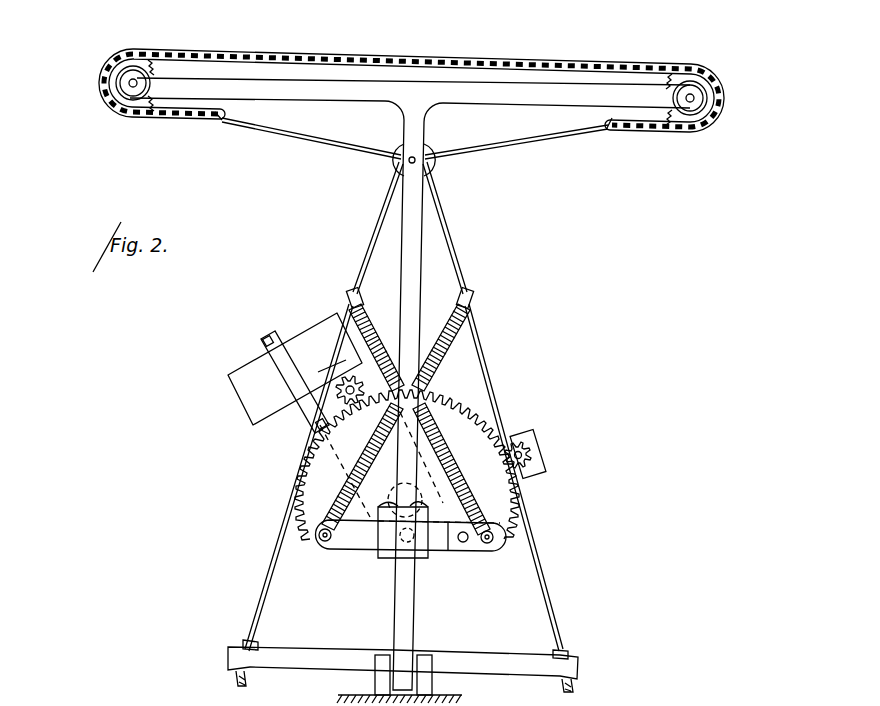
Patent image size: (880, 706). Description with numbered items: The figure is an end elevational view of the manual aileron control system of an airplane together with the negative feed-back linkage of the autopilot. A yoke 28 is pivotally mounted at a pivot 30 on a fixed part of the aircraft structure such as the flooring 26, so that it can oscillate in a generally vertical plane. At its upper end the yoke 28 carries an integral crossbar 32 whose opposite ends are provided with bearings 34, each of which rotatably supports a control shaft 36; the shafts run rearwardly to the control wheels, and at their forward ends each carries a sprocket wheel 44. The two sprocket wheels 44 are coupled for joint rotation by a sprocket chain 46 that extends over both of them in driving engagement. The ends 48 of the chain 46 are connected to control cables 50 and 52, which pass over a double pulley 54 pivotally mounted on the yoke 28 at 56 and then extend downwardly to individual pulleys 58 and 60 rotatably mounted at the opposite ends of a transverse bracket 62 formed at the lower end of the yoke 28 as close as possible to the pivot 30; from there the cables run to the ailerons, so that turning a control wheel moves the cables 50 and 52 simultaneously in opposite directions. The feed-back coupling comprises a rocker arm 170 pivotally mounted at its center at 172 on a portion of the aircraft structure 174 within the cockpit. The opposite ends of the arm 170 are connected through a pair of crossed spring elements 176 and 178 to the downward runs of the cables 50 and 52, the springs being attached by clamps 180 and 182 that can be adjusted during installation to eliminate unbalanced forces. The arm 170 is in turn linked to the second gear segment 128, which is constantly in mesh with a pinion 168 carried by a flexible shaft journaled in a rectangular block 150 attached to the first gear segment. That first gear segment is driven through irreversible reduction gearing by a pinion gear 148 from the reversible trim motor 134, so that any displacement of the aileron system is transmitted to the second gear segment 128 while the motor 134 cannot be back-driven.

The flooring 26 is at (420, 690).
The yoke 28 is at (410, 218).
The pivot 30 is at (365, 661).
The crossbar 32 is at (313, 90).
The bearing 34 is at (125, 101).
The control shaft 36 is at (128, 83).
The sprocket wheel 44 is at (135, 63).
The sprocket chain 46 is at (413, 40).
The chain end 48 is at (213, 130).
The control cable 50 is at (282, 133).
The control cable 52 is at (527, 138).
The double pulley 54 is at (393, 160).
The pivot mounting of double pulley 56 is at (415, 160).
The pulley 58 is at (560, 652).
The pulley 60 is at (243, 648).
The transverse bracket 62 is at (290, 658).
The second gear segment 128 is at (457, 423).
The trim motor 134 is at (250, 395).
The pinion gear 148 is at (338, 383).
The rectangular block 150 is at (545, 465).
The pinion 168 is at (532, 443).
The rocker arm 170 is at (342, 538).
The pivot 172 is at (415, 560).
The aircraft structure 174 is at (390, 547).
The spring element 176 is at (450, 332).
The spring element 178 is at (372, 312).
The clamp 180 is at (475, 295).
The clamp 182 is at (348, 292).